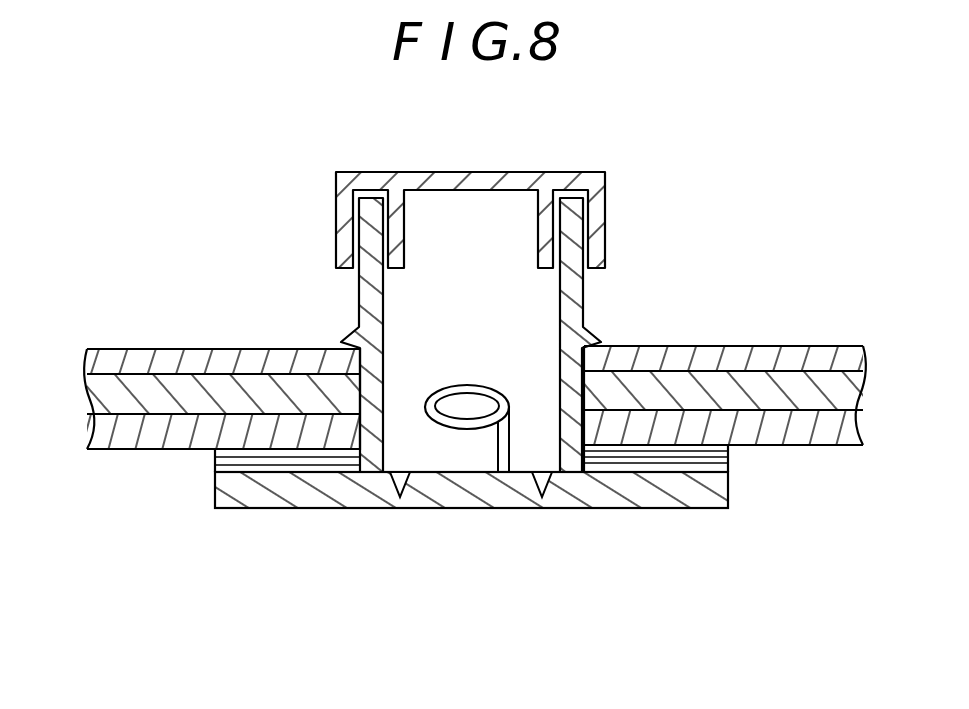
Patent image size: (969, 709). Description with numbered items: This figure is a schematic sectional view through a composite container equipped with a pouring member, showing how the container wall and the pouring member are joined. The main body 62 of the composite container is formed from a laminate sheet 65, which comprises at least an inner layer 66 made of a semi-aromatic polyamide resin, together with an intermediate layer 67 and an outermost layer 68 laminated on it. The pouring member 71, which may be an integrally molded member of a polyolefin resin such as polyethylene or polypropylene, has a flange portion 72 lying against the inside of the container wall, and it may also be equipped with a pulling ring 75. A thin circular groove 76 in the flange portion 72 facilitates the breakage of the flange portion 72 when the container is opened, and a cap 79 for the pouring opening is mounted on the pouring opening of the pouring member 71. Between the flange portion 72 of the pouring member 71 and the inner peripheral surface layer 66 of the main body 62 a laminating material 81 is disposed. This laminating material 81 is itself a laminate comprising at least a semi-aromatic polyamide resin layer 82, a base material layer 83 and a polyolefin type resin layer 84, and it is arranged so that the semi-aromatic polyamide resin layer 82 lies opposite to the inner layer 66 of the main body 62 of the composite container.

The main body of the composite container 62 is at (133, 463).
The laminate sheet 65 is at (475, 402).
The inner layer 66 is at (827, 432).
The intermediate layer 67 is at (687, 385).
The outermost layer 68 is at (815, 352).
The pouring member 71 is at (471, 416).
The flange portion 72 is at (260, 498).
The pulling ring 75 is at (467, 385).
The thin circular groove 76 is at (403, 470).
The cap 79 is at (522, 180).
The laminating material 81 is at (515, 553).
The semi-aromatic polyamide resin layer 82 is at (729, 452).
The base material layer 83 is at (729, 455).
The polyolefin type resin layer 84 is at (662, 517).